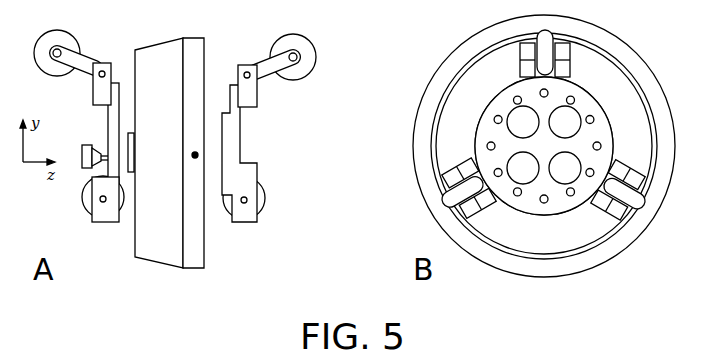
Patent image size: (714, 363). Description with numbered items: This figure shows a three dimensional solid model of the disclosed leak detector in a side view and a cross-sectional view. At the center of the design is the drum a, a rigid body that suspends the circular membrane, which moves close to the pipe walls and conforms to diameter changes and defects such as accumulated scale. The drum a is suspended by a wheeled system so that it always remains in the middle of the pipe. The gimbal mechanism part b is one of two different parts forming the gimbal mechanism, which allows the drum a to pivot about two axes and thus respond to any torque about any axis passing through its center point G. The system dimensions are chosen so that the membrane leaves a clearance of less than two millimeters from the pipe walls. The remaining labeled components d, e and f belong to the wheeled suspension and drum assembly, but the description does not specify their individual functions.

The drum a is at (159, 153).
The gimbal mechanism part b is at (207, 141).
The bracket d is at (149, 154).
The roller e is at (417, 160).
The wheel f is at (182, 65).
The center point G is at (194, 139).